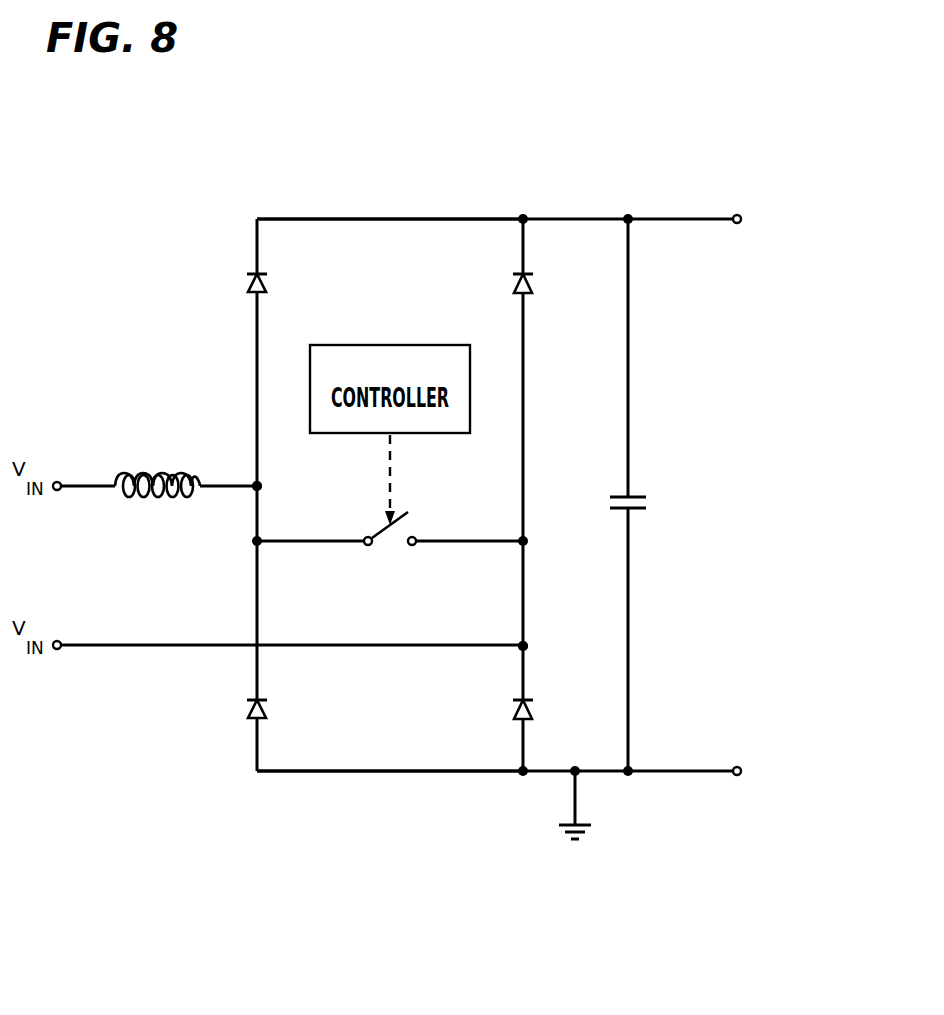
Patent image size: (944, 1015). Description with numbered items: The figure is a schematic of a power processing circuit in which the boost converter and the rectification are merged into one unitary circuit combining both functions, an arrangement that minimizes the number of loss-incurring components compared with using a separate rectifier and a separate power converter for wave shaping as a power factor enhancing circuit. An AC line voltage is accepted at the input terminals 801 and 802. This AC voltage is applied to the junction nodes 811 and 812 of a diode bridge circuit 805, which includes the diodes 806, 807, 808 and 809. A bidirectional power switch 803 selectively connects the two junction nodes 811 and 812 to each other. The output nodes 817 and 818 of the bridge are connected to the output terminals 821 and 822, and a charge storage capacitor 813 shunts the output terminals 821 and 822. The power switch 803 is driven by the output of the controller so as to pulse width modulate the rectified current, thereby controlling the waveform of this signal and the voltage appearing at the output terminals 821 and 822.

The input terminal 801 is at (62, 449).
The input terminal 802 is at (62, 682).
The bidirectional power switch 803 is at (390, 558).
The diode bridge circuit 805 is at (408, 733).
The diode 806 is at (281, 283).
The diode 807 is at (281, 708).
The diode 808 is at (500, 283).
The diode 809 is at (500, 710).
The junction node 811 is at (262, 487).
The junction node 812 is at (490, 619).
The charge storage capacitor 813 is at (650, 495).
The output node 817 is at (390, 183).
The output node 818 is at (408, 782).
The output terminal 821 is at (739, 198).
The output terminal 822 is at (737, 807).